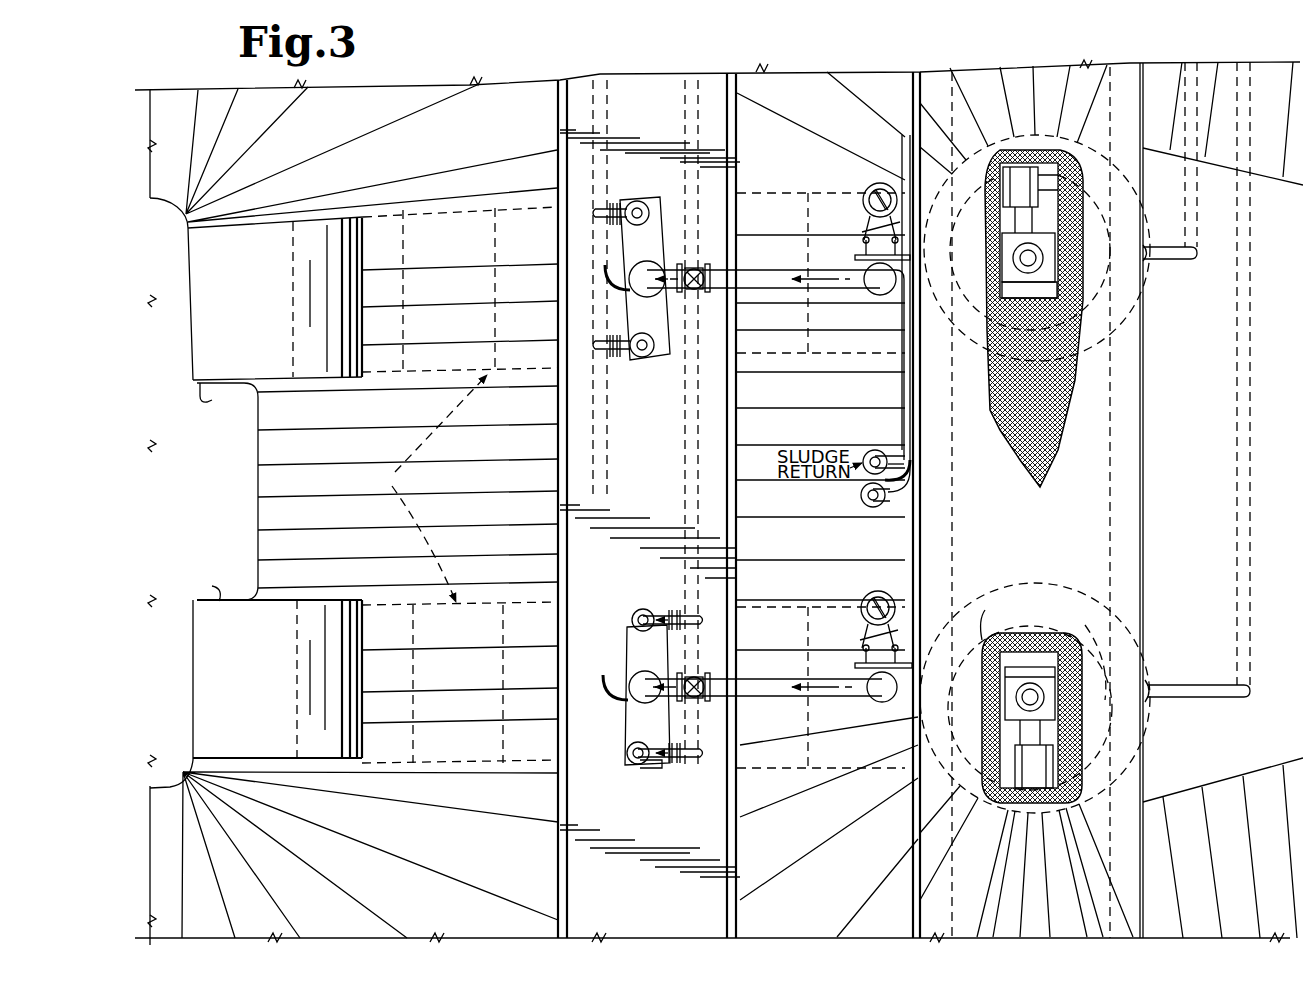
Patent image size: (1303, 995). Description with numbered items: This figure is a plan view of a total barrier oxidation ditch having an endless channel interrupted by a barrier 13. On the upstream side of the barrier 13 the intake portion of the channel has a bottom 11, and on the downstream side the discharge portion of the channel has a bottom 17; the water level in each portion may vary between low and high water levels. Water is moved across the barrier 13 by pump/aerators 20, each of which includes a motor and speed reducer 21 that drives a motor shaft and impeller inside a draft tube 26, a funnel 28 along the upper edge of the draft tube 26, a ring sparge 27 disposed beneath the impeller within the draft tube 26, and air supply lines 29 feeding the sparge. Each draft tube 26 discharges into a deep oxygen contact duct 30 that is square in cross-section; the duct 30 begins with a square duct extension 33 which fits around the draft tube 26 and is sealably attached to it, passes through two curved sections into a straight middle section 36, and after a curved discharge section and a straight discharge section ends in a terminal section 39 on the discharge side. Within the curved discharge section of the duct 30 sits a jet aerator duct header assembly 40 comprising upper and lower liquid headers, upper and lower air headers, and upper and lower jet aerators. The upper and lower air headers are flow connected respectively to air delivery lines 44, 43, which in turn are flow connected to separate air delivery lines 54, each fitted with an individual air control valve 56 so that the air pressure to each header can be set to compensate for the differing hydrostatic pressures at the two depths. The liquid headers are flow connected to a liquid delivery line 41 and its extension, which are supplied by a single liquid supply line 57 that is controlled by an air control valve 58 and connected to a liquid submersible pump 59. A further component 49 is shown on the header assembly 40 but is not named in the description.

The bottom 11 is at (1221, 500).
The barrier 13 is at (649, 506).
The bottom 17 is at (353, 515).
The pump/aerators 20 is at (1035, 682).
The motor and speed reducer 21 is at (1005, 695).
The draft tube 26 is at (1030, 625).
The ring sparge 27 is at (987, 626).
The funnel 28 is at (982, 585).
The air supply lines 29 is at (1162, 258).
The deep oxygen contact duct 30 is at (422, 488).
The square duct extension 33 is at (1082, 612).
The straight middle section 36 is at (790, 774).
The terminal section 39 is at (214, 492).
The jet aerator duct header assembly 40 is at (642, 709).
The liquid delivery line 41 is at (634, 686).
The air delivery line 43 is at (638, 768).
The air delivery line 44 is at (638, 611).
The mounting plate 49 is at (628, 722).
The separate air delivery lines 54 is at (702, 633).
The air control valves 56 is at (672, 610).
The liquid supply line 57 is at (813, 694).
The air control valve 58 is at (708, 680).
The liquid submersible pump 59 is at (867, 190).